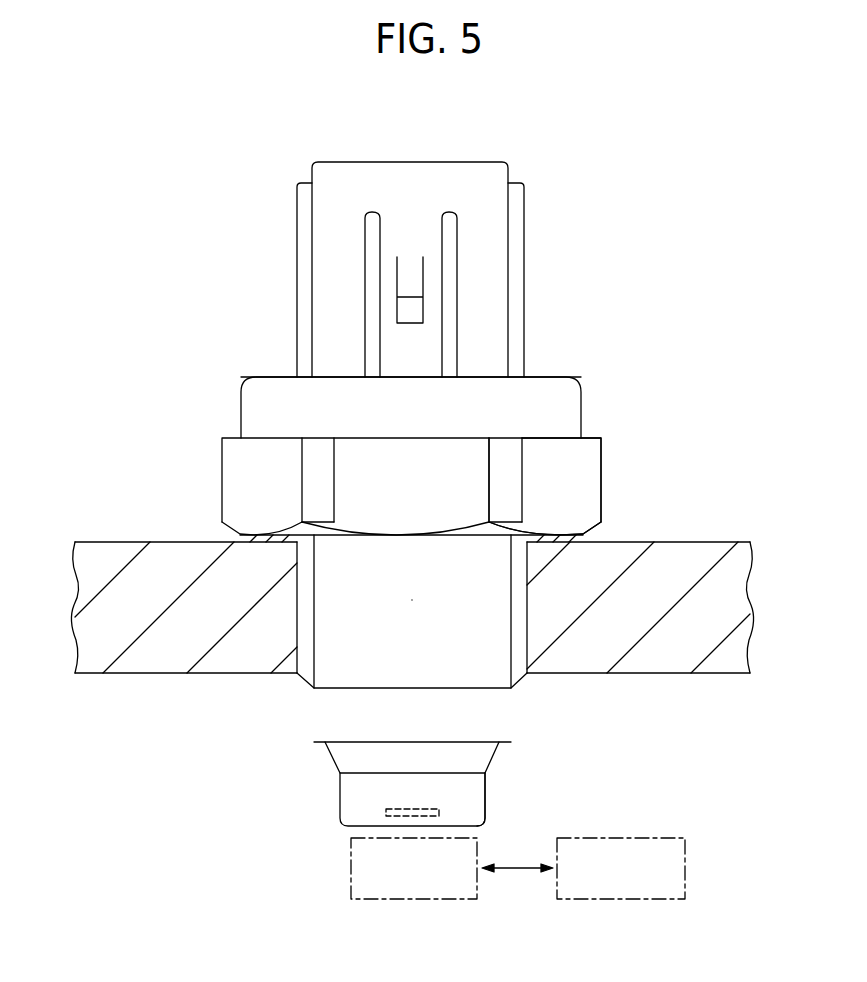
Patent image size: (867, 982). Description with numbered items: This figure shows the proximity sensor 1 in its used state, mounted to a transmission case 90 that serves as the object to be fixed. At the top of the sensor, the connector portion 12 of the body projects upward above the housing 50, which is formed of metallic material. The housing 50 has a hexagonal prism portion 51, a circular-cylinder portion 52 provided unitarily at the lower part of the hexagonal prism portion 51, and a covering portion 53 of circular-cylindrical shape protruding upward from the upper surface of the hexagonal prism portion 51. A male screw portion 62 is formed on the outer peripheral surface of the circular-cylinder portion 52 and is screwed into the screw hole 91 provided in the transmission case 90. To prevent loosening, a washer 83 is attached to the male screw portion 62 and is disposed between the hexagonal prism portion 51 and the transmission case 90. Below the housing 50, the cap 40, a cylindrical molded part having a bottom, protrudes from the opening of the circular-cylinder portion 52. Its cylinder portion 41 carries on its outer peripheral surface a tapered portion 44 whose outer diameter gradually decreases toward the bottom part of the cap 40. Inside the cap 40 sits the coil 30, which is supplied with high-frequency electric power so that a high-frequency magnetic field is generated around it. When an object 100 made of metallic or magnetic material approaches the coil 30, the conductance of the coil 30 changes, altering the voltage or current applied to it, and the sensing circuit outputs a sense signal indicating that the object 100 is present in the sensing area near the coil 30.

The proximity sensor 1 is at (247, 179).
The connector portion 12 is at (523, 217).
The covering portion 53 is at (569, 408).
The housing 50 is at (408, 486).
The hexagonal prism portion 51 is at (590, 473).
The circular-cylinder portion 52 is at (322, 716).
The male screw portion 62 is at (518, 570).
The washer 83 is at (245, 541).
The transmission case 90 is at (412, 580).
The screw hole 91 is at (525, 620).
The tapered portion 44 is at (482, 755).
The cap 40 is at (413, 799).
The cylinder portion 41 is at (478, 797).
The coil 30 is at (386, 814).
The object 100 is at (358, 893).